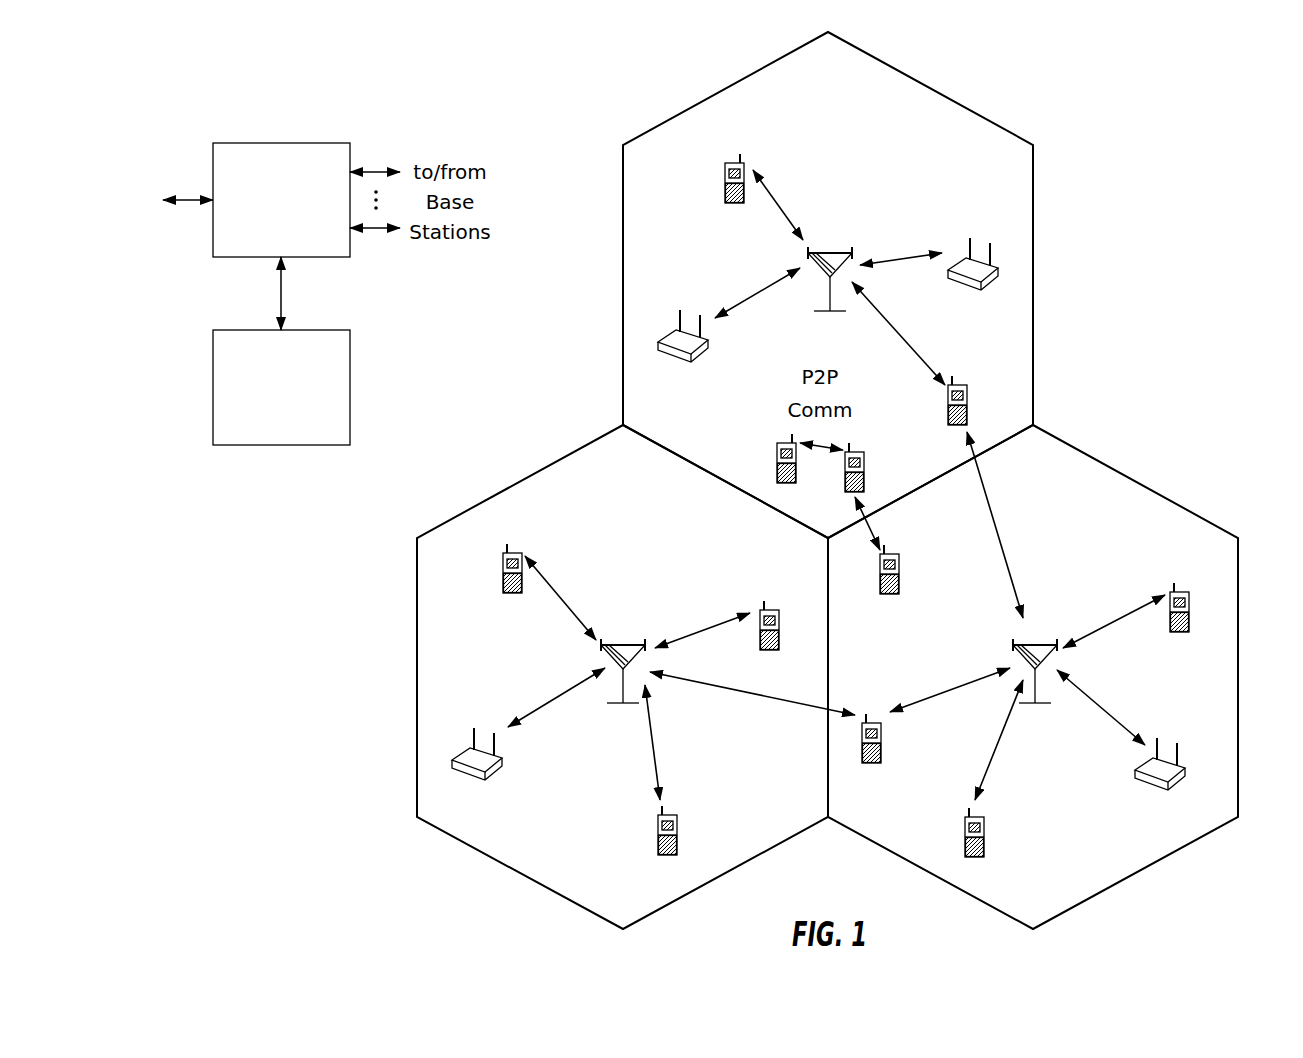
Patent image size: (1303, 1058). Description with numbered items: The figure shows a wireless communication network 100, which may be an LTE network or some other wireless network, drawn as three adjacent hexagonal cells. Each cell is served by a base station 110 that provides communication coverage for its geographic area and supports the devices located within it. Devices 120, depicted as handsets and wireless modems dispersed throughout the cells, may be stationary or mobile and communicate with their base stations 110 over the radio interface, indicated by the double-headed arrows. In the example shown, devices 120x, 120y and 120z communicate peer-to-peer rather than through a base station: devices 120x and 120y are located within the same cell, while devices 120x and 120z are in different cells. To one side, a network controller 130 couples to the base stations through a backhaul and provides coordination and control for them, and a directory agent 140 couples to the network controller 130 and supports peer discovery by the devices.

The wireless communication network 100 is at (1174, 98).
The base station 110 is at (832, 250).
The device 120 is at (724, 172).
The device 120x is at (876, 456).
The device 120y is at (776, 458).
The device 120z is at (899, 570).
The network controller 130 is at (277, 143).
The directory agent 140 is at (300, 330).